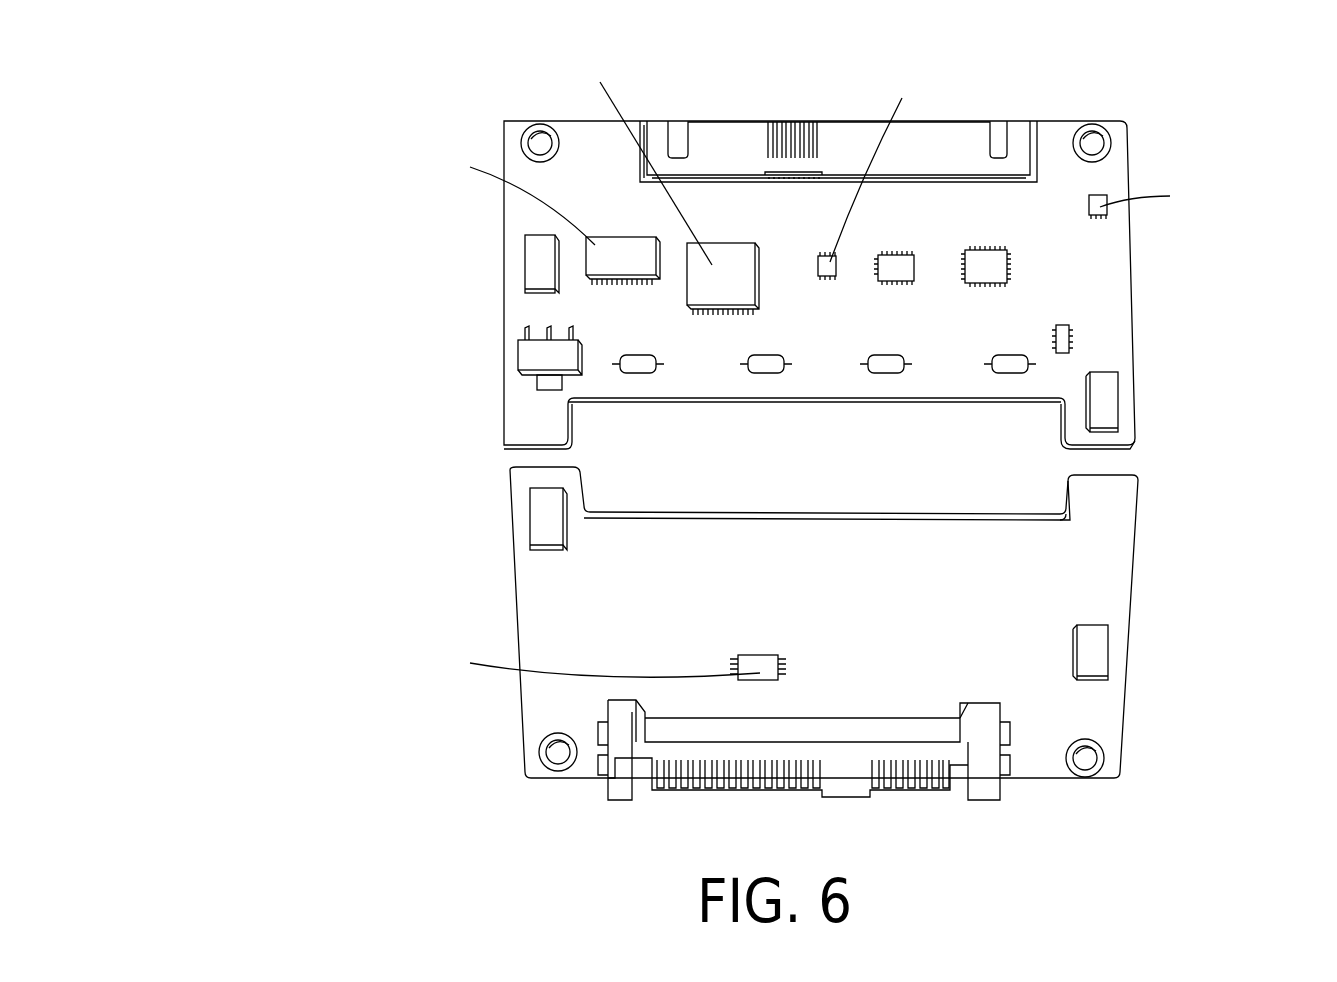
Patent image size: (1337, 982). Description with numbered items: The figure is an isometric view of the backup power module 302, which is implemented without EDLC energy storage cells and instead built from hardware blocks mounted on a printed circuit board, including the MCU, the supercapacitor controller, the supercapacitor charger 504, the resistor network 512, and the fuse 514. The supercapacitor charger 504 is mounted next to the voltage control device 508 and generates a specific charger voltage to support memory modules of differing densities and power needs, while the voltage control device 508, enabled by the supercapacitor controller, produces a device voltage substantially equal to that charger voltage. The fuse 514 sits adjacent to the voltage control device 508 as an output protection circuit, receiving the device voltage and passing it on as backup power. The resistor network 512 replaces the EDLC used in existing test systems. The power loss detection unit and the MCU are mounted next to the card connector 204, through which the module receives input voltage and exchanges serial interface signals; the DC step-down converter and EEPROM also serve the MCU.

The backup power module 302 is at (490, 72).
The card connector 204 is at (818, 86).
The fuse 514 is at (913, 262).
The supercapacitor charger 504 is at (995, 270).
The voltage control device 508 is at (1064, 341).
The resistor network 512 is at (1012, 361).